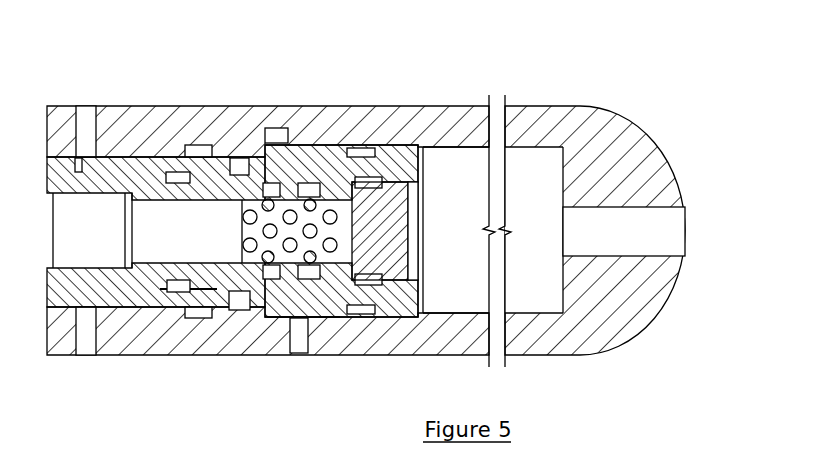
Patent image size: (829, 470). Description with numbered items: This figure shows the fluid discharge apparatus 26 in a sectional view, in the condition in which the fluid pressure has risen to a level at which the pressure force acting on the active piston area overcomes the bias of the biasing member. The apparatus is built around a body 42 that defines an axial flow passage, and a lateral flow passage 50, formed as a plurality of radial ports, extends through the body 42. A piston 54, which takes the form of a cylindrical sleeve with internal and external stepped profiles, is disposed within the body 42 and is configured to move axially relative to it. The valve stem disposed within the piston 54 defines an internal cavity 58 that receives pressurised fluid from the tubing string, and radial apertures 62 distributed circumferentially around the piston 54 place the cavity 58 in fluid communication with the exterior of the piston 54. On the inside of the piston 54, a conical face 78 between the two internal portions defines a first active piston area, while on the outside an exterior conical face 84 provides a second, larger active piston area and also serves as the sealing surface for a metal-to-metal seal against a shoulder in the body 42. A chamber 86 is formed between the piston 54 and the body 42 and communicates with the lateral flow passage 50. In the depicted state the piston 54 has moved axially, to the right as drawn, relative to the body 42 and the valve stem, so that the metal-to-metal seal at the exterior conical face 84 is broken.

The fluid discharge apparatus 26 is at (687, 107).
The body 42 is at (445, 117).
The lateral flow passage 50 is at (305, 125).
The piston 54 is at (140, 140).
The internal cavity 58 is at (73, 247).
The radial apertures 62 is at (241, 312).
The conical face 78 is at (197, 300).
The exterior conical face 84 is at (270, 317).
The chamber 86 is at (252, 160).